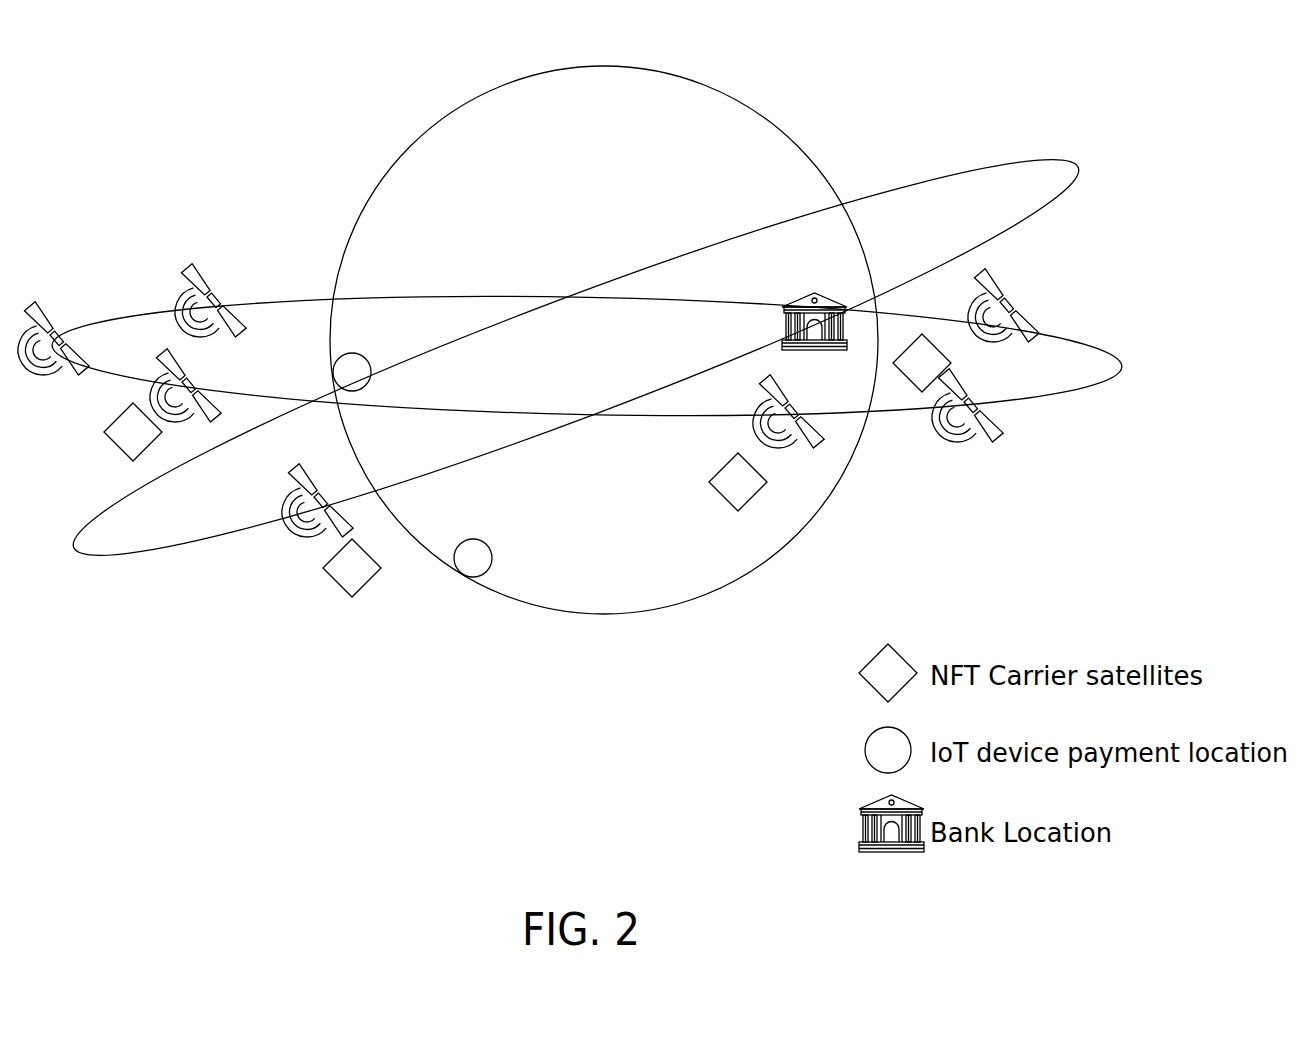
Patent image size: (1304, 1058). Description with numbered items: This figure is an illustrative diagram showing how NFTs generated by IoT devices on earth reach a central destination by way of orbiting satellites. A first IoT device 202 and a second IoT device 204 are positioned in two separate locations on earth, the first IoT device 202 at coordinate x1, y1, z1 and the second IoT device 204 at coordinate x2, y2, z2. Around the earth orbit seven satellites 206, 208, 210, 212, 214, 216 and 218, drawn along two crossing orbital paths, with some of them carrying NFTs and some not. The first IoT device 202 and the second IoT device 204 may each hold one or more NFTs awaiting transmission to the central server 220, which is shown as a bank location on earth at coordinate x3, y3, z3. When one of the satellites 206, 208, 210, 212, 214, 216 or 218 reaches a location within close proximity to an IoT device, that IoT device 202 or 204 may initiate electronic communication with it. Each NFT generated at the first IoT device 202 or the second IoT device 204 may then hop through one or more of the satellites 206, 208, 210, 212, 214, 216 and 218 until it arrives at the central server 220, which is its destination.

The first IoT device 202 is at (535, 355).
The second IoT device 204 is at (582, 505).
The satellite 206 is at (197, 384).
The satellite 208 is at (290, 534).
The satellite 210 is at (810, 440).
The satellite 212 is at (975, 441).
The satellite 214 is at (1020, 306).
The satellite 216 is at (218, 290).
The satellite 218 is at (55, 314).
The central server 220 is at (782, 316).